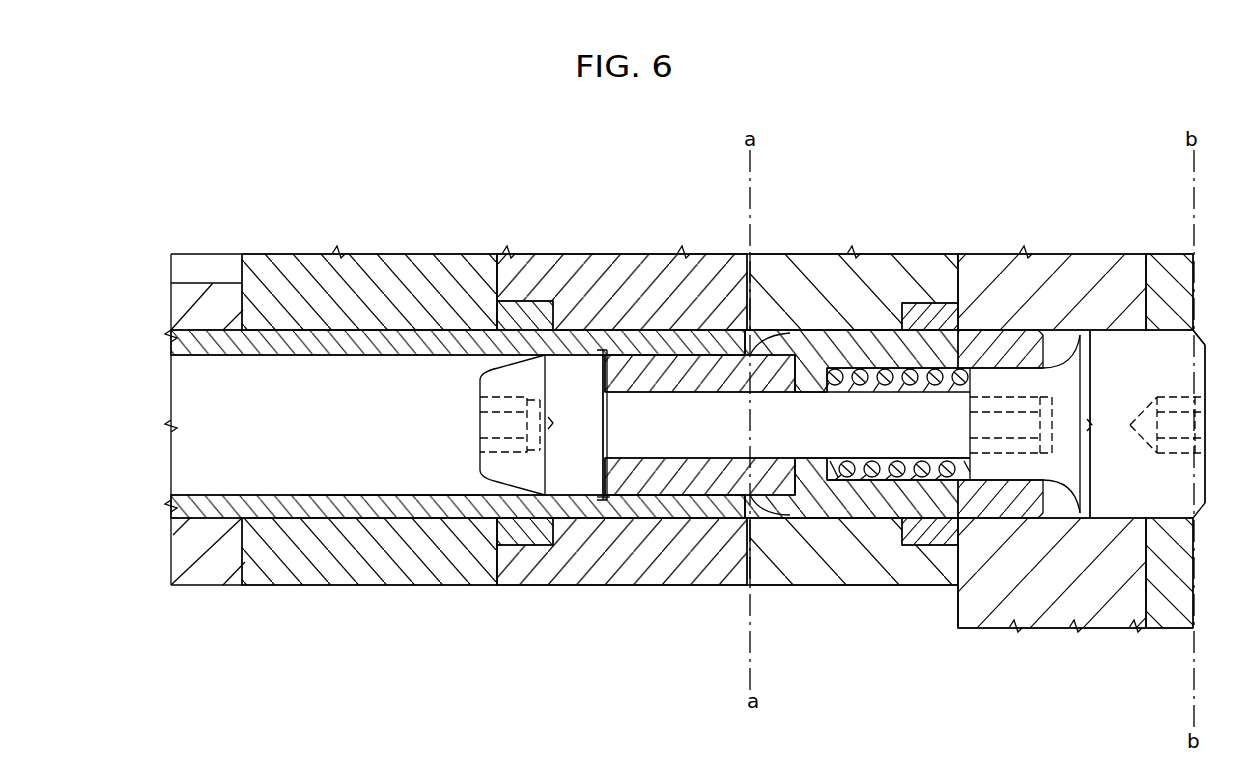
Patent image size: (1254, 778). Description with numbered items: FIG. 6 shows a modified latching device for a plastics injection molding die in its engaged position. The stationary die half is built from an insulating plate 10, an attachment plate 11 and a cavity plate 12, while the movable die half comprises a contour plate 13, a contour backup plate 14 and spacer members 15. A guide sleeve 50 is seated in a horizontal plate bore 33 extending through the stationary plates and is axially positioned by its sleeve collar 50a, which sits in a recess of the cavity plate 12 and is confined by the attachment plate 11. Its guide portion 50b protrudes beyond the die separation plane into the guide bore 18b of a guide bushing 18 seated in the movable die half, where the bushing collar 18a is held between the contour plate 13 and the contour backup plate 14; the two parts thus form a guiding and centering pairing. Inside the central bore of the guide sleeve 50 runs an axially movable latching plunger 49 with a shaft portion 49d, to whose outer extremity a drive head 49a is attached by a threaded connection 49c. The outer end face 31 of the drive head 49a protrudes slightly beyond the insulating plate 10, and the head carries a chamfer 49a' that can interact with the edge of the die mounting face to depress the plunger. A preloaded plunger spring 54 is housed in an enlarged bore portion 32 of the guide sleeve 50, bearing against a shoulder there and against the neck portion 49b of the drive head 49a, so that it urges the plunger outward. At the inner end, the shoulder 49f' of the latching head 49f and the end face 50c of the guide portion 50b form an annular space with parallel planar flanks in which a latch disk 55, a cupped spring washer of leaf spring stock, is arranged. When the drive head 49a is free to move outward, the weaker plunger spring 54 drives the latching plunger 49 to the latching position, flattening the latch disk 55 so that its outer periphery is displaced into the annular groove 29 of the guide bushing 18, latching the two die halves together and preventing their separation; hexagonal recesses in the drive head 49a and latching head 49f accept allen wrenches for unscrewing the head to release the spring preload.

The insulating plate 10 is at (1168, 280).
The attachment plate 11 is at (1090, 277).
The cavity plate 12 is at (867, 262).
The contour plate 13 is at (718, 272).
The contour backup plate 14 is at (365, 290).
The spacer members 15 is at (200, 300).
The guide bushing 18 is at (171, 343).
The bushing collar 18a is at (527, 535).
The guide bore 18b is at (408, 495).
The annular groove 29 is at (604, 497).
The outer end face 31 is at (1205, 372).
The enlarged bore portion 32 is at (915, 375).
The plate bore 33 is at (1067, 343).
The latching plunger 49 is at (1205, 503).
The drive head 49a is at (1167, 424).
The chamfer 49a' is at (1223, 313).
The neck portion 49b is at (1067, 470).
The threaded connection 49c is at (1005, 440).
The shaft portion 49d is at (773, 410).
The latching head 49f is at (540, 341).
The shoulder 49f' is at (700, 290).
The guide sleeve 50 is at (842, 480).
The sleeve collar 50a is at (935, 530).
The guide portion 50b is at (702, 475).
The end face 50c is at (593, 355).
The plunger spring 54 is at (873, 460).
The latch disk 55 is at (612, 498).